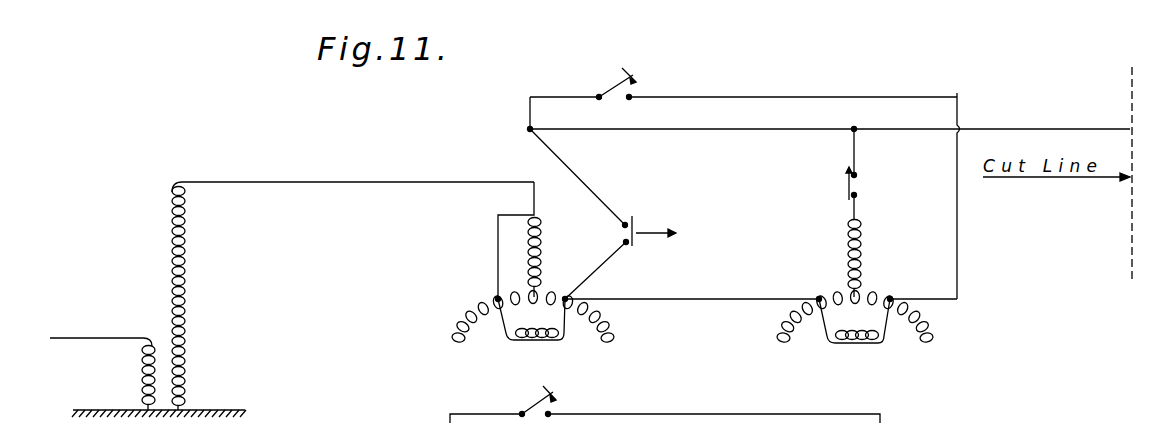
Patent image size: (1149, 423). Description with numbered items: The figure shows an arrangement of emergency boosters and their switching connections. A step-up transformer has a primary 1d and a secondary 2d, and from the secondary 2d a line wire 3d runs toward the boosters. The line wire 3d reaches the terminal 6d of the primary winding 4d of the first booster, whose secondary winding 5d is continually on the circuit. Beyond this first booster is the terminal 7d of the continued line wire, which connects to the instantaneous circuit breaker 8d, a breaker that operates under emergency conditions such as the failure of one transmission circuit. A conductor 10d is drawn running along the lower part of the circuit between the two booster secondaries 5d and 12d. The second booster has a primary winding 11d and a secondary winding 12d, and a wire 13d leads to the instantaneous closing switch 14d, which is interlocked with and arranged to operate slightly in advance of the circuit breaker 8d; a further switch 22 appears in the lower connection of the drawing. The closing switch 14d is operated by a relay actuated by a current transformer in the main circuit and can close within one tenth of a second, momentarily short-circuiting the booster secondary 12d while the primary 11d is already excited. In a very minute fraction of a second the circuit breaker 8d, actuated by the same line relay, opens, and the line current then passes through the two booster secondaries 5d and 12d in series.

The primary of step-up transformer 1d is at (142, 380).
The secondary of step-up transformer 2d is at (186, 380).
The line wire 3d is at (287, 183).
The primary winding of booster 4d is at (527, 260).
The secondary winding of booster 5d is at (545, 342).
The terminal of primary winding 6d is at (531, 181).
The terminal of continued line wire 7d is at (528, 130).
The instantaneous circuit breaker 8d is at (636, 222).
The conductor 10d is at (700, 300).
The primary winding of second booster 11d is at (847, 257).
The secondary winding of second booster 12d is at (862, 345).
The wire leading to switch 13d is at (957, 233).
The instantaneous closing switch 14d is at (612, 99).
The switch 22 is at (527, 408).